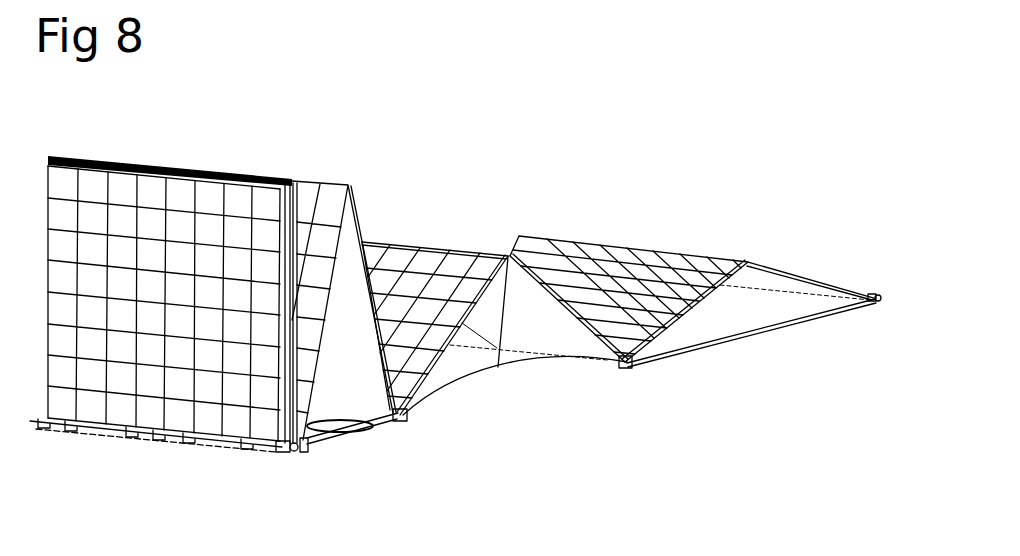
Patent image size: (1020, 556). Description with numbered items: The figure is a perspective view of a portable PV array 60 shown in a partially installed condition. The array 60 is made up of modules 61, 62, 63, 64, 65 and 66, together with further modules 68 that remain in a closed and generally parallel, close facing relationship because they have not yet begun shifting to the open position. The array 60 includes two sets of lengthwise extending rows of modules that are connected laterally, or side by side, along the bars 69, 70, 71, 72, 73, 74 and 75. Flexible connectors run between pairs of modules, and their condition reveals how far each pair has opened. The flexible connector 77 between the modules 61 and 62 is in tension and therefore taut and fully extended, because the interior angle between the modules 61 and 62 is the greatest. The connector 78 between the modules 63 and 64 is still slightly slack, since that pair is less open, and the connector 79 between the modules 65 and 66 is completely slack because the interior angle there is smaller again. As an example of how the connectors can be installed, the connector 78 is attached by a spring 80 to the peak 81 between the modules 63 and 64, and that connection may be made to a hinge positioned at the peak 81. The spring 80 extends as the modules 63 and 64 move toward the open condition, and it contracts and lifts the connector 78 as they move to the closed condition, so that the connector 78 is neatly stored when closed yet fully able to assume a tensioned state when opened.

The PV array 60 is at (613, 135).
The module 61 is at (789, 273).
The module 62 is at (667, 267).
The module 63 is at (544, 317).
The module 64 is at (443, 268).
The module 65 is at (350, 333).
The module 66 is at (327, 197).
The further modules 68 is at (268, 156).
The bar 69 is at (882, 293).
The bar 70 is at (630, 367).
The bar 71 is at (406, 420).
The bar 72 is at (305, 452).
The bar 73 is at (293, 455).
The bar 74 is at (287, 452).
The bar 75 is at (248, 448).
The flexible connector 77 is at (792, 324).
The flexible connector 78 is at (456, 383).
The flexible connector 79 is at (378, 429).
The spring 80 is at (500, 322).
The peak 81 is at (393, 243).